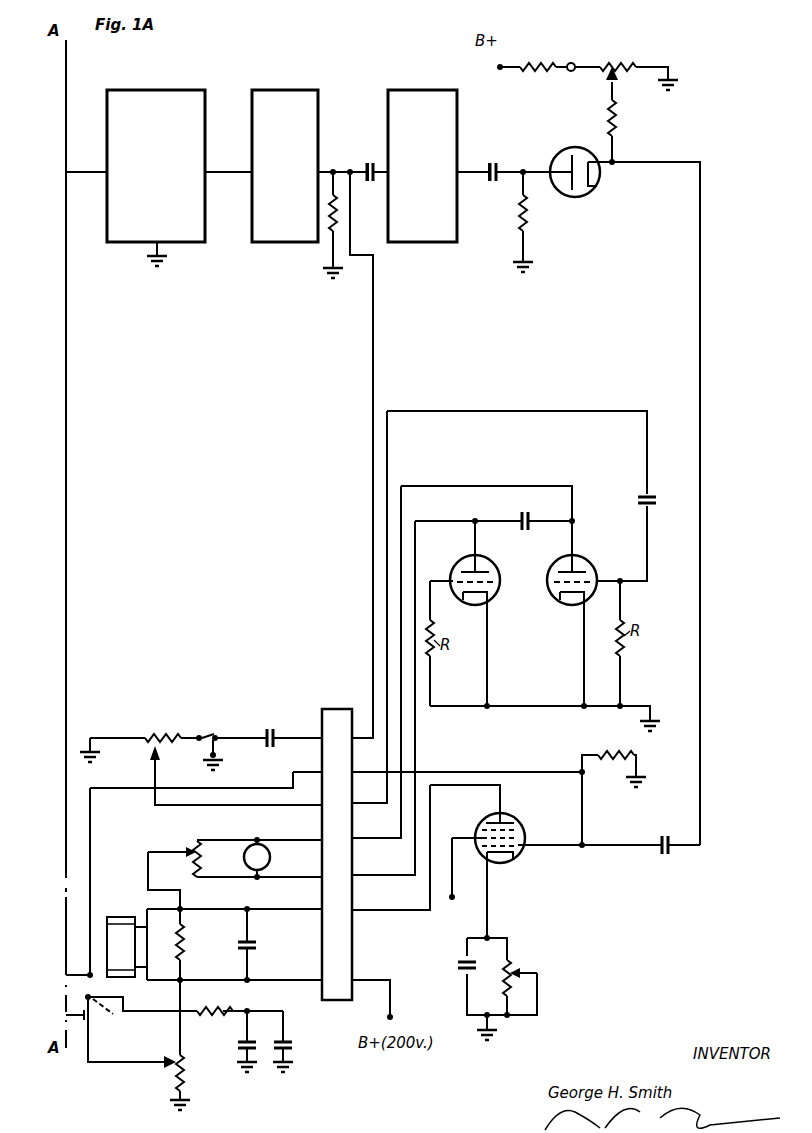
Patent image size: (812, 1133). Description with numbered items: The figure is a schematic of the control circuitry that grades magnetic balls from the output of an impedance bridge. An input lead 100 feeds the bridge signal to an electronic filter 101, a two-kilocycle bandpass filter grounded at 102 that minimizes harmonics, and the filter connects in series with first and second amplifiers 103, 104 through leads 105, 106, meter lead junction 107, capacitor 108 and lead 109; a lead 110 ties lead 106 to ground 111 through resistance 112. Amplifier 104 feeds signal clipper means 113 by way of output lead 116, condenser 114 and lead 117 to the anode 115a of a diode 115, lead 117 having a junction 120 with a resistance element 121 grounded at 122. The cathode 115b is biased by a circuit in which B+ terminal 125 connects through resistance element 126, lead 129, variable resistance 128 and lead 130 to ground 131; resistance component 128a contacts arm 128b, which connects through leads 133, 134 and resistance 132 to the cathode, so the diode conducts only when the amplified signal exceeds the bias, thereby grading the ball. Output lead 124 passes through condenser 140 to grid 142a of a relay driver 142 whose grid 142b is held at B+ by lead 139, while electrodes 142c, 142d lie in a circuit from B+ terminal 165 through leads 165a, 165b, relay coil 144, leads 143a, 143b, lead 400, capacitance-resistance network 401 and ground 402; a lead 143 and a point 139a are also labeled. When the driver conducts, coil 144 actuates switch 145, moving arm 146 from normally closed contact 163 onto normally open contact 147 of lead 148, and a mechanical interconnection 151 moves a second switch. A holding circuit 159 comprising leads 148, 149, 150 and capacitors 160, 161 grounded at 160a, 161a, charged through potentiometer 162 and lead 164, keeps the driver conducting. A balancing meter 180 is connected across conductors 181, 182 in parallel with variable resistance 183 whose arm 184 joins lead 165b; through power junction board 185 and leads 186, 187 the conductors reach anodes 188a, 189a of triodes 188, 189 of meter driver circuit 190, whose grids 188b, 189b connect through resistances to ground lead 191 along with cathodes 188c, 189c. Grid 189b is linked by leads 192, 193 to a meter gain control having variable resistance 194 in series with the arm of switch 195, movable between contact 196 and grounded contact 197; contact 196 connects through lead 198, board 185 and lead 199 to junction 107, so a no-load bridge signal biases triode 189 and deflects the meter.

The input lead 100 is at (93, 172).
The electronic filter 101 is at (160, 100).
The ground 102 is at (168, 253).
The first amplifier 103 is at (303, 100).
The second amplifier 104 is at (407, 100).
The lead 105 is at (226, 170).
The lead 106 is at (332, 168).
The meter lead junction 107 is at (353, 170).
The capacitor 108 is at (370, 182).
The lead 109 is at (384, 168).
The lead 110 is at (328, 200).
The ground 111 is at (325, 281).
The resistance 112 is at (340, 229).
The signal clipper means 113 is at (656, 137).
The condenser 114 is at (480, 179).
The diode 115 is at (559, 156).
The anode 115a is at (560, 190).
The cathode 115b is at (592, 178).
The output lead 116 is at (472, 170).
The lead 117 is at (520, 170).
The junction 120 is at (521, 177).
The resistance element 121 is at (530, 233).
The ground 122 is at (531, 266).
The output lead 124 is at (703, 208).
The B+ voltage terminal 125 is at (504, 63).
The resistance element 126 is at (552, 63).
The variable resistance 128 is at (607, 78).
The resistance component 128a is at (636, 62).
The arm 128b is at (619, 78).
The lead 129 is at (566, 70).
The lead 130 is at (668, 60).
The ground 131 is at (676, 84).
The resistance 132 is at (618, 118).
The lead 133 is at (606, 100).
The lead 134 is at (615, 158).
The lead 139 is at (456, 906).
The terminal 139a is at (449, 901).
The condenser 140 is at (665, 835).
The relay driver 142 is at (519, 852).
The grid 142a is at (496, 868).
The grid component 142b is at (484, 826).
The relay driver electrode 142c is at (513, 822).
The relay driver electrode 142d is at (518, 861).
The lead 143 is at (481, 783).
The lead 143a is at (299, 913).
The lead 143b is at (395, 915).
The relay coil 144 is at (129, 908).
The switch 145 is at (84, 991).
The switch arm 146 is at (66, 1015).
The normally open contact 147 is at (84, 979).
The lead 148 is at (122, 812).
The lead 149 is at (438, 770).
The lead 150 is at (596, 807).
The mechanical interconnection 151 is at (83, 1021).
The holding circuit 159 is at (235, 1074).
The capacitor 160 is at (238, 1049).
The grounded terminal 160a is at (256, 1082).
The capacitor 161 is at (291, 1048).
The grounded terminal 161a is at (291, 1074).
The potentiometer 162 is at (176, 1070).
The contact 163 is at (104, 1005).
The lead 164 is at (110, 1063).
The B+ voltage terminal 165 is at (394, 1016).
The lead 165a is at (393, 988).
The lead 165b is at (258, 983).
The meter 180 is at (264, 843).
The conductor 181 is at (231, 876).
The conductor 182 is at (226, 838).
The variable resistance 183 is at (196, 856).
The adjustable arm 184 is at (155, 851).
The power junction board 185 is at (335, 710).
The lead 186 is at (460, 520).
The lead 187 is at (379, 813).
The triode 188 is at (461, 563).
The anode 188a is at (486, 568).
The grid 188b is at (492, 589).
The cathode 188c is at (471, 603).
The triode 189 is at (457, 484).
The anode 189a is at (579, 558).
The grid 189b is at (593, 569).
The cathode 189c is at (570, 604).
The meter driver circuit 190 is at (503, 485).
The ground lead 191 is at (556, 706).
The lead 192 is at (507, 409).
The lead 193 is at (150, 777).
The variable resistance 194 is at (159, 733).
The switch 195 is at (206, 733).
The contact 196 is at (219, 735).
The contact 197 is at (220, 760).
The lead 198 is at (265, 733).
The lead 199 is at (371, 460).
The lead 400 is at (489, 931).
The capacitance-resistance network 401 is at (512, 1004).
The ground 402 is at (494, 1046).